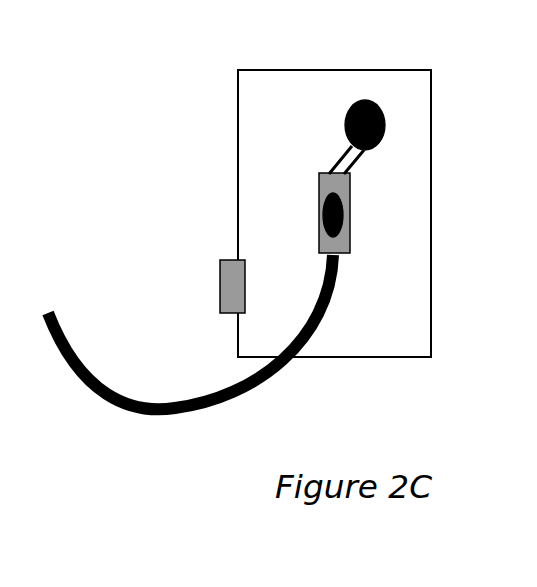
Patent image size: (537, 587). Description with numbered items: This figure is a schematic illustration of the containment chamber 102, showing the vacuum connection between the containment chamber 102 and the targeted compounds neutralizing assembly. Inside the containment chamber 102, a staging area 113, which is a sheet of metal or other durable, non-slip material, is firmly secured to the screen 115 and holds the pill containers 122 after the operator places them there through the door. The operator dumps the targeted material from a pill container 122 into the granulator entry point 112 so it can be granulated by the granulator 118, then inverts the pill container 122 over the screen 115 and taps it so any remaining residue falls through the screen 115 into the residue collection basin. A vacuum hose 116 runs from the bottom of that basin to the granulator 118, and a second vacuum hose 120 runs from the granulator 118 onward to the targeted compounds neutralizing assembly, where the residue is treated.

The containment chamber 102 is at (431, 302).
The granulator entry point 112 is at (382, 108).
The staging area 113 is at (320, 230).
The screen 115 is at (290, 92).
The vacuum hose 116 is at (352, 157).
The granulator 118 is at (222, 285).
The vacuum hose 120 is at (198, 410).
The pill containers 122 is at (320, 185).